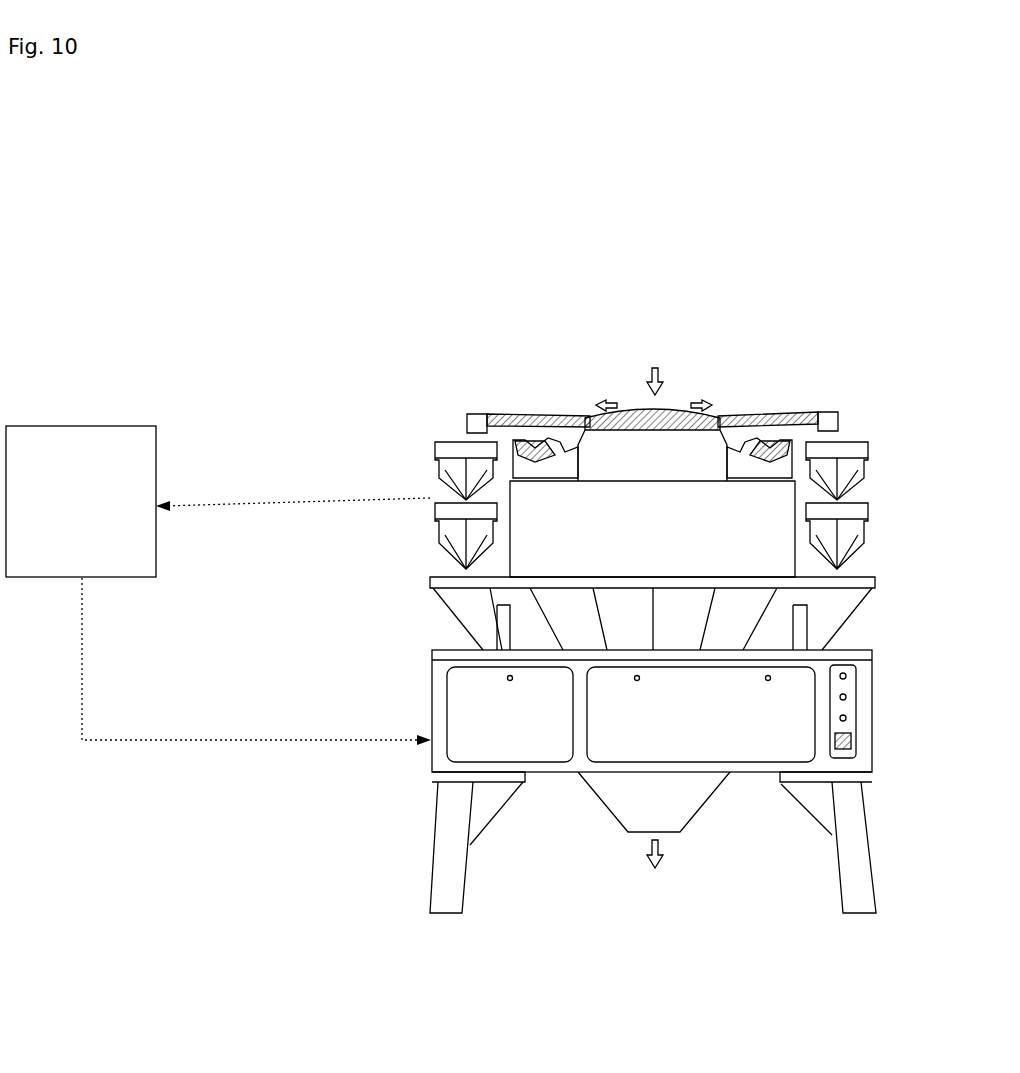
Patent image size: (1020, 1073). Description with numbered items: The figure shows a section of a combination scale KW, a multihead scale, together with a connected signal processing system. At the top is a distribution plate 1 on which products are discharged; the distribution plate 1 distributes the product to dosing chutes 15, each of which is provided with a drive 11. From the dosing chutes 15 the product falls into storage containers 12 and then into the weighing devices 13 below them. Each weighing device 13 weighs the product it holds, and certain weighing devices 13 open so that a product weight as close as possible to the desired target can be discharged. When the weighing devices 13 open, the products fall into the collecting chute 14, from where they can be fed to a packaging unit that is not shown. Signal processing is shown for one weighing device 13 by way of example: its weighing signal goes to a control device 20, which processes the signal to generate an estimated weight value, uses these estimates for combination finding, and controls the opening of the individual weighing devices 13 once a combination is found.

The distribution plate 1 is at (672, 405).
The drive 11 is at (578, 452).
The storage container 12 is at (435, 466).
The weighing device 13 is at (435, 528).
The collecting chute 14 is at (868, 596).
The dosing chute 15 is at (514, 413).
The control device 20 is at (72, 456).
The combination scale KW is at (710, 282).